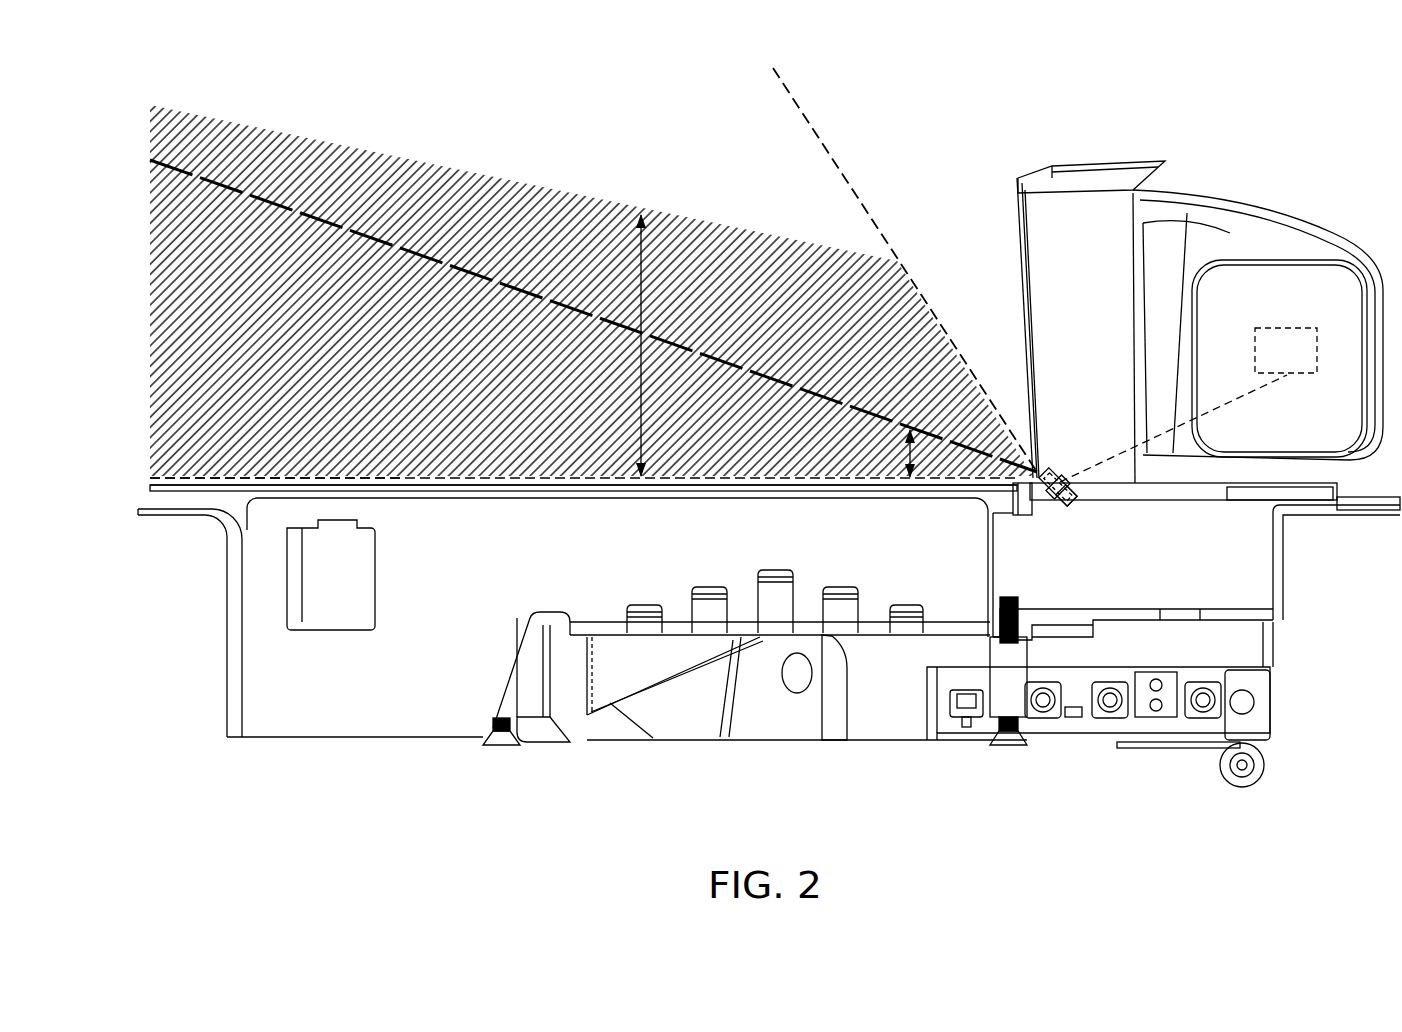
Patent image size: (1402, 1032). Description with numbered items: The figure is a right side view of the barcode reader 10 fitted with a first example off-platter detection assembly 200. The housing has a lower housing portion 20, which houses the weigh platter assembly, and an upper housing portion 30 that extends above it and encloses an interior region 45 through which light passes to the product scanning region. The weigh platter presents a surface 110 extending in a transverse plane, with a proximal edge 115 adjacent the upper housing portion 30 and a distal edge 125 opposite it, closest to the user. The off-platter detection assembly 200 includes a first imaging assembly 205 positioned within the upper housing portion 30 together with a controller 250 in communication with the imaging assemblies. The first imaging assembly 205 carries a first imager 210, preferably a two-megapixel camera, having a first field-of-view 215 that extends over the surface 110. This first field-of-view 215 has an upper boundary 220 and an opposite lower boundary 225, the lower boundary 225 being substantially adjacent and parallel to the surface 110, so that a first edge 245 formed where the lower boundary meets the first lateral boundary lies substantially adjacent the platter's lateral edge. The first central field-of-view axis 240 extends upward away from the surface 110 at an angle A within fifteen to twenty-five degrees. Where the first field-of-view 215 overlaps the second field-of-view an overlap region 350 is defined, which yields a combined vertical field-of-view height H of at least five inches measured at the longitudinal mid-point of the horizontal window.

The barcode reader 10 is at (965, 98).
The lower housing portion 20 is at (212, 632).
The upper housing portion 30 is at (1208, 320).
The interior region 45 is at (1228, 597).
The surface 110 is at (345, 486).
The proximal edge 115 is at (1030, 510).
The distal edge 125 is at (148, 490).
The off-platter detection assembly 200 is at (1158, 495).
The first imaging assembly 205 is at (1077, 497).
The first imager 210 is at (1075, 452).
The first field-of-view 215 is at (778, 172).
The upper boundary 220 is at (843, 170).
The lower boundary 225 is at (432, 479).
The first central field-of-view axis 240 is at (905, 428).
The first edge 245 is at (148, 475).
The controller 250 is at (1284, 328).
The overlap region 350 is at (243, 115).
The combined vertical field-of-view height H is at (641, 268).
The angle A is at (915, 457).